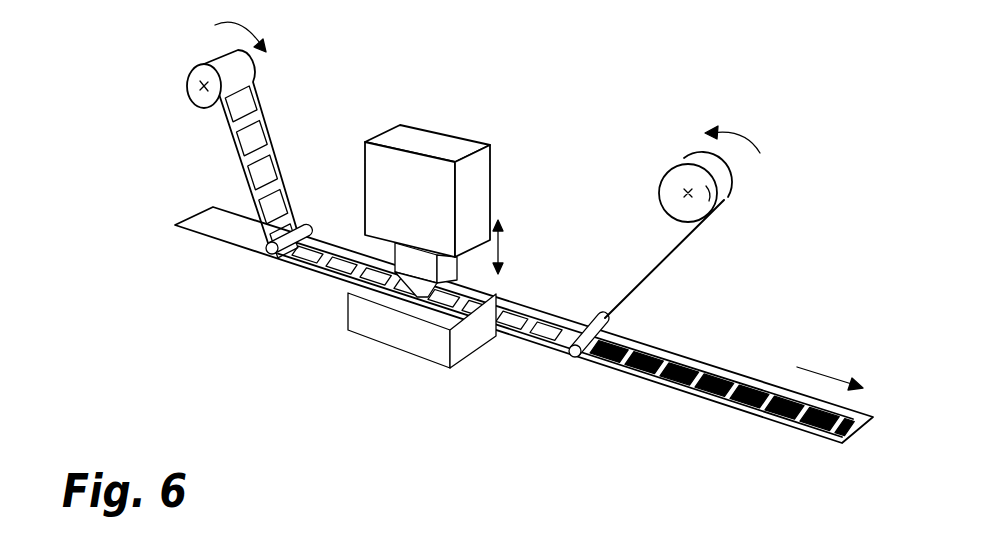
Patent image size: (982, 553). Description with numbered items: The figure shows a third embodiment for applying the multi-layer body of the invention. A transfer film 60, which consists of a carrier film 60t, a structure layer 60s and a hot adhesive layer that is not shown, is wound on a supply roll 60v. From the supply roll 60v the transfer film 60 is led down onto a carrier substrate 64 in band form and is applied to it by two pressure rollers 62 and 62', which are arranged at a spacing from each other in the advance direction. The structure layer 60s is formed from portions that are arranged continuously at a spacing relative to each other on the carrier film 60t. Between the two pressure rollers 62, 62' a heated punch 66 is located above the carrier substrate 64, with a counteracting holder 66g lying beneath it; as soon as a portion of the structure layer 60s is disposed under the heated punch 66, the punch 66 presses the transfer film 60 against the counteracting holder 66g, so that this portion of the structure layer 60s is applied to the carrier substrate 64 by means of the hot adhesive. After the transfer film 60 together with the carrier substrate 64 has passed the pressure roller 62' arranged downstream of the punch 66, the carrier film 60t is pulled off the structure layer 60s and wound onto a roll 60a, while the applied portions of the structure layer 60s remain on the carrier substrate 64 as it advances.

The transfer film 60 is at (250, 73).
The supply roll 60v is at (187, 90).
The heated punch 66 is at (418, 143).
The carrier substrate 64 is at (212, 226).
The pressure roller 62 is at (276, 282).
The counteracting holder 66g is at (410, 342).
The pressure roller 62' is at (592, 378).
The structure layer 60s is at (698, 387).
The roll 60a is at (717, 182).
The carrier film 60t is at (690, 243).